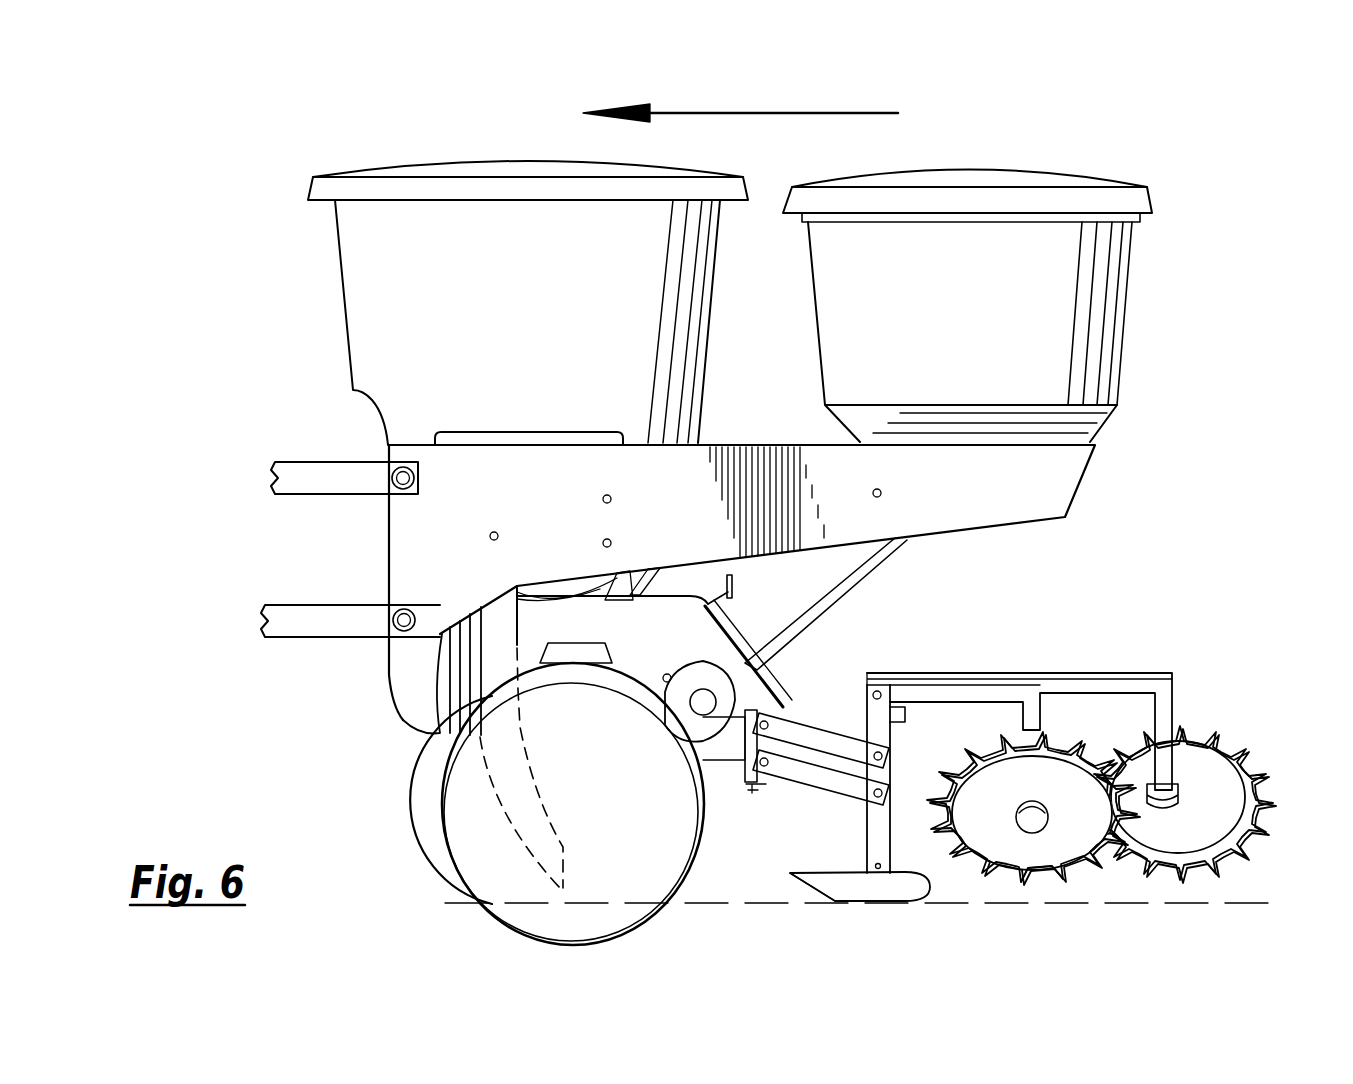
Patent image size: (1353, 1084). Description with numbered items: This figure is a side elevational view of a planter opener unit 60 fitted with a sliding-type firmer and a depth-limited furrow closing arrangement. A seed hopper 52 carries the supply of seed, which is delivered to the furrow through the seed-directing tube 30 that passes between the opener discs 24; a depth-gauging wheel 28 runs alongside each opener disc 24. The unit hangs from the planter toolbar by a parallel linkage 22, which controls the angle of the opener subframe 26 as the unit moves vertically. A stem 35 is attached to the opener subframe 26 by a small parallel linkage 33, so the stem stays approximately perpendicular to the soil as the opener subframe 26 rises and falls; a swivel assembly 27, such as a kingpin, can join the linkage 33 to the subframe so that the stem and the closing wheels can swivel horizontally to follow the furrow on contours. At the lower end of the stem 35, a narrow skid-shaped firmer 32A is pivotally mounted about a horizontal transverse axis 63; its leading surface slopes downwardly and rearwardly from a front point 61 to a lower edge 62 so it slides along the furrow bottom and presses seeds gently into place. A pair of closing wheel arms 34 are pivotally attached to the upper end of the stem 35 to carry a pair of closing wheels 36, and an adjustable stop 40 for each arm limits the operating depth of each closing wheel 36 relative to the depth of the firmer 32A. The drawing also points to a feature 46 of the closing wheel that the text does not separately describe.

The planter opener unit 60 is at (1176, 290).
The seed hopper 52 is at (386, 319).
The parallel linkage 22 is at (264, 480).
The seed-directing tube 30 is at (490, 655).
The opener disc 24 is at (380, 826).
The depth-gauging wheel 28 is at (518, 904).
The opener subframe 26 is at (725, 630).
The swivel assembly 27 is at (751, 794).
The parallel linkage 33 is at (844, 783).
The stem 35 is at (873, 732).
The closing wheel arm 34 is at (1055, 688).
The adjustable stop 40 is at (898, 712).
The closing wheel 36 is at (1020, 845).
The wheel teeth 46 is at (1073, 868).
The skid-shaped firmer 32A is at (832, 919).
The front point 61 is at (790, 873).
The lower edge 62 is at (867, 903).
The horizontal transverse axis 63 is at (880, 869).